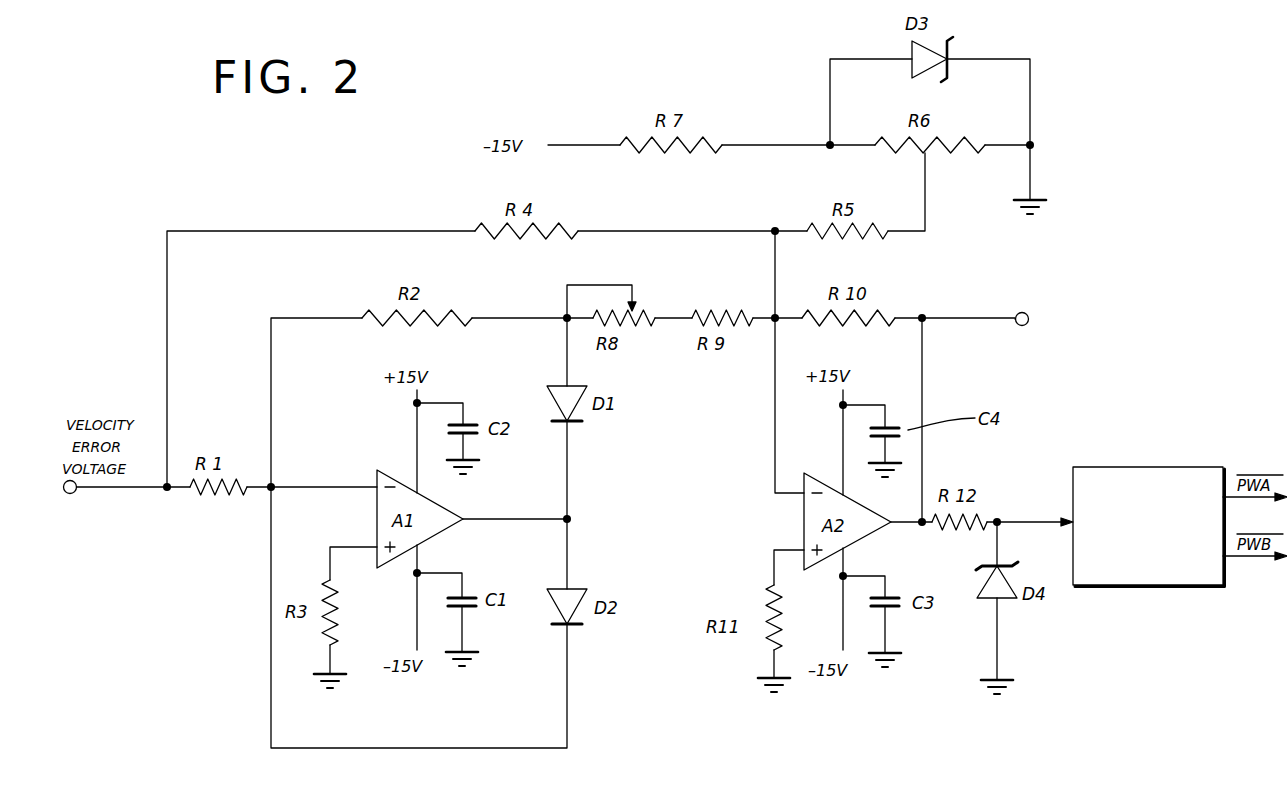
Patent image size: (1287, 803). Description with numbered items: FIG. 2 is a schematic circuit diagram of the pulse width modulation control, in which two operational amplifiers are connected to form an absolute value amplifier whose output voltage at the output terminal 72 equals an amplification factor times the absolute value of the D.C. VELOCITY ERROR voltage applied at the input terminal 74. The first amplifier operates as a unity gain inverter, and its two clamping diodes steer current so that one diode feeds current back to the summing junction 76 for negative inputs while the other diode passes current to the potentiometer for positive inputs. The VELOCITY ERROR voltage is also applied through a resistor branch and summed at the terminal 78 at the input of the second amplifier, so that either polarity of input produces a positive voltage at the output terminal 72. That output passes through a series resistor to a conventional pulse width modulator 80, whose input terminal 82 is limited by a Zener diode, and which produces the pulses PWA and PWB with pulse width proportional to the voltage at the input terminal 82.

The output terminal 72 is at (1027, 314).
The input terminal 74 is at (74, 494).
The summing junction 76 is at (276, 484).
The summing terminal 78 is at (771, 313).
The pulse width modulator 80 is at (1130, 466).
The input terminal of pulse width modulator 82 is at (1062, 520).